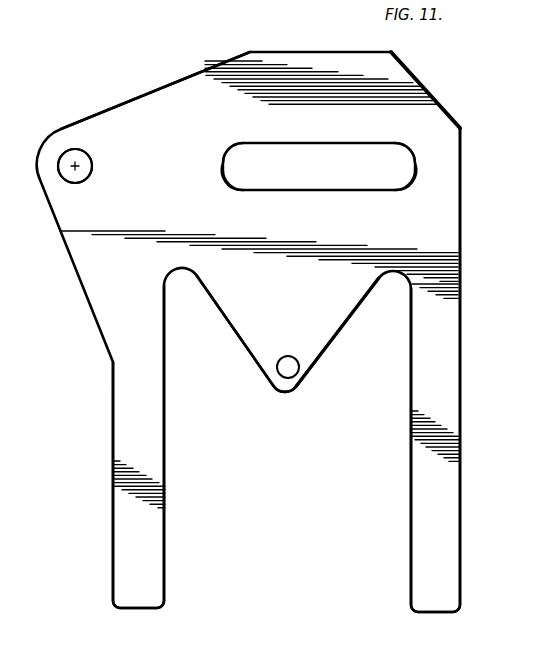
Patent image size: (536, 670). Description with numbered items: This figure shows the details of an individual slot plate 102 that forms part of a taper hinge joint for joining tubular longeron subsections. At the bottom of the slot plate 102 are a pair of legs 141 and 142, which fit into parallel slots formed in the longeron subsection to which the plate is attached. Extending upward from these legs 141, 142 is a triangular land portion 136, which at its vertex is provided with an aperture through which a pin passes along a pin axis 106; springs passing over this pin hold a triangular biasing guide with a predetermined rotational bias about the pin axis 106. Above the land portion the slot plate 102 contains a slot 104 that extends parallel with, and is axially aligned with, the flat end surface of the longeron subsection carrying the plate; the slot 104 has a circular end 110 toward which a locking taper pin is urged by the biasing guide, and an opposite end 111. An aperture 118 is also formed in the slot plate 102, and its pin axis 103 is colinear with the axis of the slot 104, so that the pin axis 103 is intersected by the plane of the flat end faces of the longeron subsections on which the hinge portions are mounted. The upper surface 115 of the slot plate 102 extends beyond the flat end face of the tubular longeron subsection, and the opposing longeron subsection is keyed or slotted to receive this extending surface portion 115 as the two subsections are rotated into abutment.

The slot plate 102 is at (437, 104).
The upper surface 115 is at (180, 78).
The pin axis 103 is at (75, 165).
The aperture 118 is at (91, 160).
The slot 104 is at (348, 143).
The circular end 110 is at (223, 184).
The right end of slot 111 is at (414, 178).
The pin axis 106 is at (288, 356).
The triangular land portion 136 is at (270, 380).
The leg 141 is at (153, 525).
The leg 142 is at (441, 526).